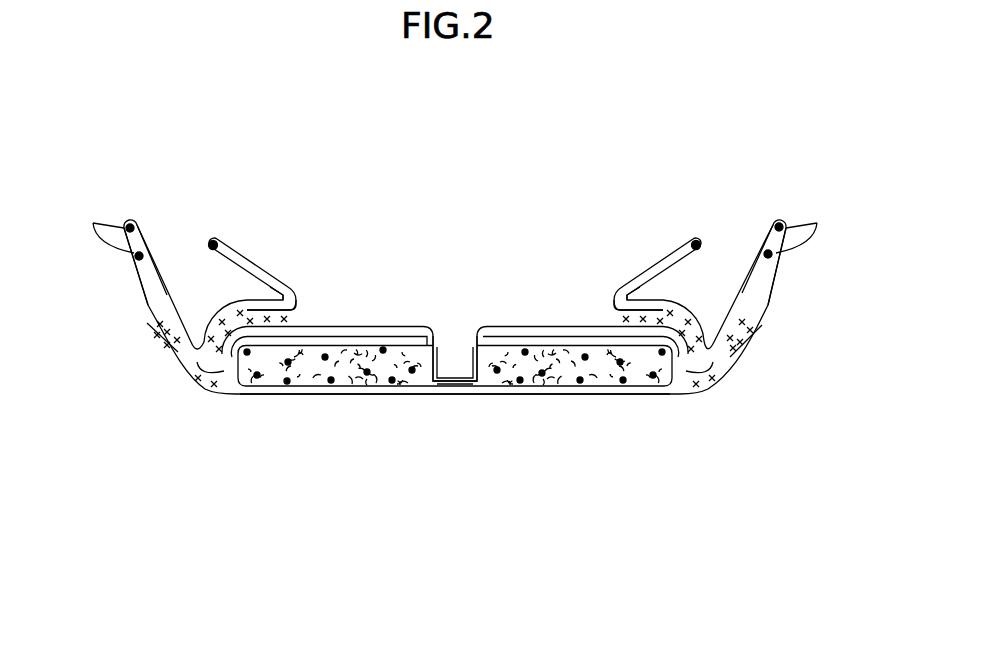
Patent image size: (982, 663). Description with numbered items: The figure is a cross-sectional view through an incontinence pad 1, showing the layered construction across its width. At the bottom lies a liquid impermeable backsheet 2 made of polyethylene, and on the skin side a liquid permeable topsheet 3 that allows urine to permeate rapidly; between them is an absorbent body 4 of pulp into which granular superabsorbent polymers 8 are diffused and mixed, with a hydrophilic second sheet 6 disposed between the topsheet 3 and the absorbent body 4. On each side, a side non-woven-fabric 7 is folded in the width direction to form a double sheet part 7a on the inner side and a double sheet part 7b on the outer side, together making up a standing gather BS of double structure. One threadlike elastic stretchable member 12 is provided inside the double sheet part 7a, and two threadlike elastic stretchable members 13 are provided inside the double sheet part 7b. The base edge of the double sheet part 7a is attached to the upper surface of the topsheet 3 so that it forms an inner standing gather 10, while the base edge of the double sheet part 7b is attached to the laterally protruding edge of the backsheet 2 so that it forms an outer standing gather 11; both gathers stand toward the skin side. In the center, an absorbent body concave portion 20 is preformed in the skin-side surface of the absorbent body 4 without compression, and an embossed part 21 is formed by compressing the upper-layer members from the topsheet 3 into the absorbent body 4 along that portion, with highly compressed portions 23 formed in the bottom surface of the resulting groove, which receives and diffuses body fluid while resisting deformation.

The incontinence pad 1 is at (548, 203).
The liquid impermeable backsheet 2 is at (604, 395).
The liquid permeable topsheet 3 is at (513, 326).
The absorbent body 4 is at (293, 368).
The hydrophilic second sheet 6 is at (386, 326).
The side non-woven-fabric 7 is at (147, 307).
The double sheet part on the inner side 7a is at (277, 277).
The double sheet part on the outer side 7b is at (143, 277).
The superabsorbent polymers 8 is at (366, 375).
The inner standing gather 10 is at (251, 253).
The outer standing gather 11 is at (139, 221).
The threadlike elastic stretchable member 12 is at (208, 243).
The threadlike elastic stretchable member 13 is at (455, 230).
The absorbent body concave portion 20 is at (437, 358).
The embossed part 21 is at (459, 376).
The highly compressed portion 23 is at (454, 387).
The standing gather BS is at (203, 202).